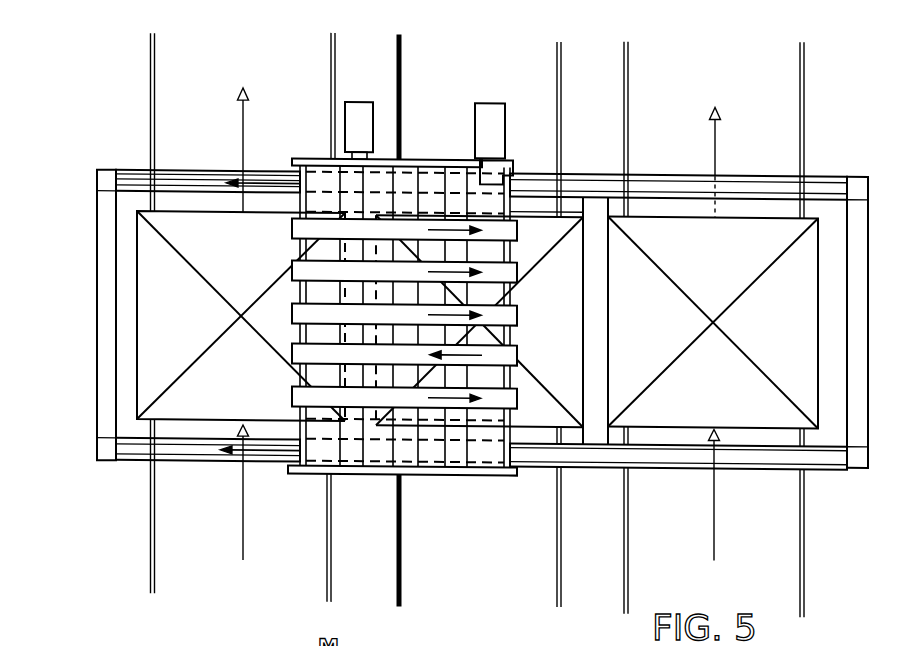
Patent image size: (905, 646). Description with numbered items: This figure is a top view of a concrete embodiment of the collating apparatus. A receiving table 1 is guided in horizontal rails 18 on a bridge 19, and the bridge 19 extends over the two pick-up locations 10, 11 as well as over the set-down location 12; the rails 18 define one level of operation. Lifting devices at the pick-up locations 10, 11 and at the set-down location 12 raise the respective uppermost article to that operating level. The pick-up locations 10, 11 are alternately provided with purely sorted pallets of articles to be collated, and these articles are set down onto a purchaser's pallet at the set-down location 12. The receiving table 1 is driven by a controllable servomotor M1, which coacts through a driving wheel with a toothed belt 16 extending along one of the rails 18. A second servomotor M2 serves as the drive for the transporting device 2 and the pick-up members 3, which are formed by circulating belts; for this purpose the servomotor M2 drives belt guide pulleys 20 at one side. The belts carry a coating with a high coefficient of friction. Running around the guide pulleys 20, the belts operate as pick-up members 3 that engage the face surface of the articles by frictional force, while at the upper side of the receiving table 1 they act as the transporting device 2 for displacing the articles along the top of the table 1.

The receiving table 1 is at (421, 490).
The transporting device 2 is at (415, 233).
The pick-up members 3 is at (292, 394).
The pick-up location 10 is at (182, 300).
The pick-up location 11 is at (791, 328).
The set-down location 12 is at (569, 330).
The toothed belt 16 is at (661, 184).
The horizontal rails 18 is at (191, 175).
The bridge 19 is at (97, 395).
The belt guide pulleys 20 is at (515, 225).
The controllable servomotor M1 is at (358, 95).
The second servomotor M2 is at (487, 95).